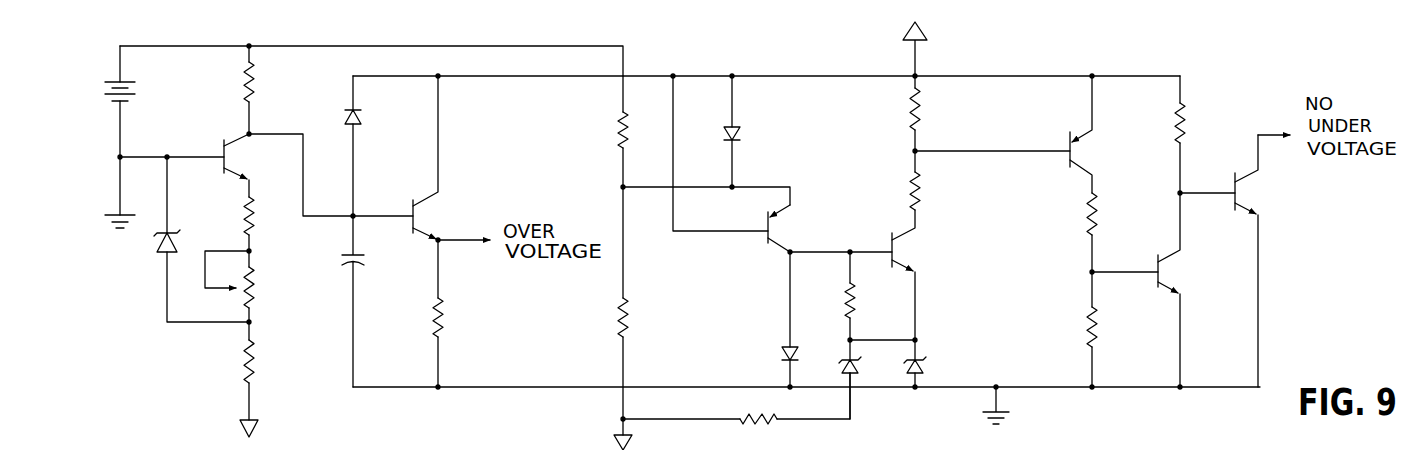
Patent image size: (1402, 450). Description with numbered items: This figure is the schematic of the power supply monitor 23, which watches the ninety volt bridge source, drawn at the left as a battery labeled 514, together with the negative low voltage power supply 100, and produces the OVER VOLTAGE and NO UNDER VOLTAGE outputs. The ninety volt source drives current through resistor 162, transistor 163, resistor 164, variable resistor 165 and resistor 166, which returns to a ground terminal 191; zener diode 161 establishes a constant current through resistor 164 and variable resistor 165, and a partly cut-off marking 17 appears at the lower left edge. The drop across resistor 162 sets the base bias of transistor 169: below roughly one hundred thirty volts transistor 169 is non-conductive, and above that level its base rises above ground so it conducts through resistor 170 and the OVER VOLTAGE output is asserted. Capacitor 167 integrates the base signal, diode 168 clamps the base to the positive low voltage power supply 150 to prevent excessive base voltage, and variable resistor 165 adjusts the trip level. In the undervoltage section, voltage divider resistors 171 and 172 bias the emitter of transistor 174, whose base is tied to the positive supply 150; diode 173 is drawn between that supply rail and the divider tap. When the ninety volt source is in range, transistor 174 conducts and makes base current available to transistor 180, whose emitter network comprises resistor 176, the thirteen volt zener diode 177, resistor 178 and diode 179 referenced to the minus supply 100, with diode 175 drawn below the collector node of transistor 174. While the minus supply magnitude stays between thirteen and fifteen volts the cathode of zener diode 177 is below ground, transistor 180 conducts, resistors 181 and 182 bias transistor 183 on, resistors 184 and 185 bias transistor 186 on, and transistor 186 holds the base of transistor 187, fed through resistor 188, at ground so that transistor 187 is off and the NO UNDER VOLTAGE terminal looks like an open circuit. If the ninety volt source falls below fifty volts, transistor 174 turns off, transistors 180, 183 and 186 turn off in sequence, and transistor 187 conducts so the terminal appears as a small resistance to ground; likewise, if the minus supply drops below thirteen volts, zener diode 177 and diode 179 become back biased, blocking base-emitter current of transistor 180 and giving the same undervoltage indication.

The battery 514 is at (136, 83).
The zener diode 161 is at (156, 247).
The resistor 162 is at (262, 85).
The transistor 163 is at (237, 158).
The resistor 164 is at (280, 217).
The variable resistor 165 is at (274, 276).
The resistor 166 is at (262, 360).
The capacitor 167 is at (383, 262).
The diode 168 is at (366, 110).
The transistor 169 is at (426, 214).
The resistor 170 is at (452, 322).
The voltage divider resistor 171 is at (601, 121).
The voltage divider resistor 172 is at (603, 315).
The diode 173 is at (747, 132).
The transistor 174 is at (790, 232).
The diode 175 is at (776, 351).
The resistor 176 is at (830, 294).
The zener diode 177 is at (838, 354).
The resistor 178 is at (756, 402).
The diode 179 is at (928, 366).
The transistor 180 is at (905, 249).
The resistor 181 is at (930, 190).
The resistor 182 is at (930, 115).
The transistor 183 is at (1083, 158).
The resistor 184 is at (1105, 215).
The resistor 185 is at (1105, 325).
The transistor 186 is at (1170, 275).
The transistor 187 is at (1252, 196).
The resistor 188 is at (1193, 120).
The ground terminal 191 is at (268, 430).
The positive low voltage power supply 150 is at (928, 30).
The minus low voltage power supply 100 is at (608, 442).
The power supply monitor 23 is at (1025, 264).
The power supply 17 is at (136, 447).